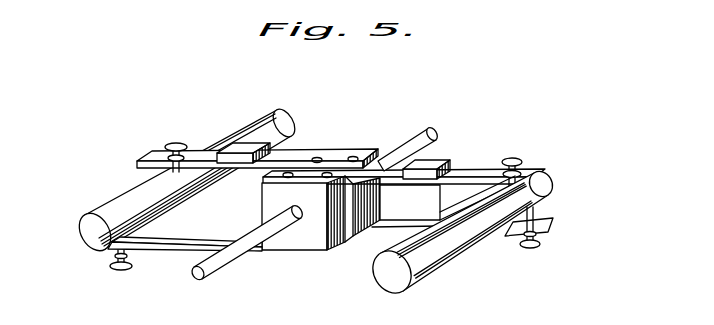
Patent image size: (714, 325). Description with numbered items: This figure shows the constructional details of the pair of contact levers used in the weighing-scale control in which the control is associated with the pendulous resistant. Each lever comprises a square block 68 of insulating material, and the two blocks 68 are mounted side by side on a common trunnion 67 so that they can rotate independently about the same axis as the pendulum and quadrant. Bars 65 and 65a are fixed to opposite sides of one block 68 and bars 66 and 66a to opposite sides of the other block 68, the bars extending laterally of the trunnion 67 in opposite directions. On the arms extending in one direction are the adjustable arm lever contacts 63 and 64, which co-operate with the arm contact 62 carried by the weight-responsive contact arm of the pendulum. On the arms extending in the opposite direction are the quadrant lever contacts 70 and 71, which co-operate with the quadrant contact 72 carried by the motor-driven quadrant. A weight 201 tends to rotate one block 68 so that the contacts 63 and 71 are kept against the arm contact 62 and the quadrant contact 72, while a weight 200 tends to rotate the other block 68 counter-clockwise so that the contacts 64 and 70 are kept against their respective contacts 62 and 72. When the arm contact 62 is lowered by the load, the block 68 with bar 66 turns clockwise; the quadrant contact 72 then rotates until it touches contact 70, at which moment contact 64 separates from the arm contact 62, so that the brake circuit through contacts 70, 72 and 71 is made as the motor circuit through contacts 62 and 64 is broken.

The arm contact 62 is at (552, 192).
The lever contact 63 is at (522, 167).
The lever contact 64 is at (537, 214).
The lever bar 65 is at (472, 175).
The lever bar 65a is at (187, 246).
The lever bar 66 is at (395, 223).
The lever bar 66a is at (300, 157).
The trunnion 67 is at (277, 227).
The square block 68 is at (277, 199).
The quadrant lever contact 70 is at (177, 141).
The quadrant lever contact 71 is at (112, 264).
The quadrant contact 72 is at (130, 198).
The weight 200 is at (240, 148).
The weight 201 is at (430, 165).